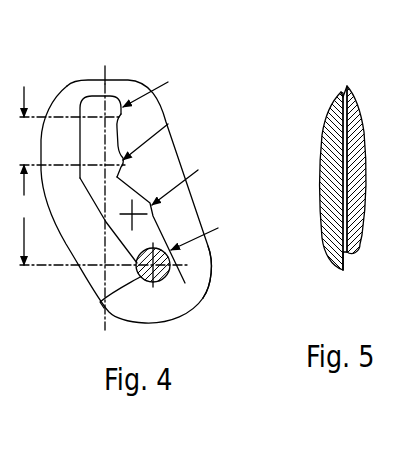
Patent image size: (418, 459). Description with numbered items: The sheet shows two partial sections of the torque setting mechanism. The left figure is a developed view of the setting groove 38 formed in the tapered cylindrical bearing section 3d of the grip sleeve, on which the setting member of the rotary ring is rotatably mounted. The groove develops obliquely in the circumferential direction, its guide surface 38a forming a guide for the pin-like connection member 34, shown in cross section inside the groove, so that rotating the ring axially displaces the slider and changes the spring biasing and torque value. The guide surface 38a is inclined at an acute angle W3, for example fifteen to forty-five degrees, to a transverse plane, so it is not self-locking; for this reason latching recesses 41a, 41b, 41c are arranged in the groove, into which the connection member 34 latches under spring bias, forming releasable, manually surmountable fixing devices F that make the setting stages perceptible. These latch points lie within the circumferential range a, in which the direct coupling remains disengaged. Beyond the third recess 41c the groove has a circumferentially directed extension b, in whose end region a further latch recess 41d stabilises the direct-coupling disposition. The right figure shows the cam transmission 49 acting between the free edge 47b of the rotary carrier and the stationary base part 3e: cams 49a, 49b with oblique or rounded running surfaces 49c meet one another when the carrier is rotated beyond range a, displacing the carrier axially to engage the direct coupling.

In FIG. 4, the bearing section 3d is at (80, 84).
In FIG. 5, the leaf spring portion 3e is at (357, 113).
In FIG. 4, the connection member 34 is at (103, 300).
In FIG. 4, the setting groove 38 is at (104, 222).
In FIG. 4, the guide surface 38a is at (137, 266).
In FIG. 4, the latching recess 41a is at (196, 282).
In FIG. 4, the latching recess 41b is at (152, 216).
In FIG. 4, the latching recess 41c is at (124, 168).
In FIG. 4, the further latch recess 41d is at (117, 94).
In FIG. 5, the free edge 47b is at (320, 210).
In FIG. 5, the cam transmission 49 is at (273, 156).
In FIG. 5, the cam 49a is at (342, 97).
In FIG. 5, the cam 49b is at (348, 255).
In FIG. 5, the running surfaces 49c is at (342, 128).
In FIG. 4, the fixing devices F is at (176, 154).
In FIG. 4, the acute angle W3 is at (188, 283).
In FIG. 4, the latch point range a is at (24, 228).
In FIG. 4, the extension b is at (26, 141).